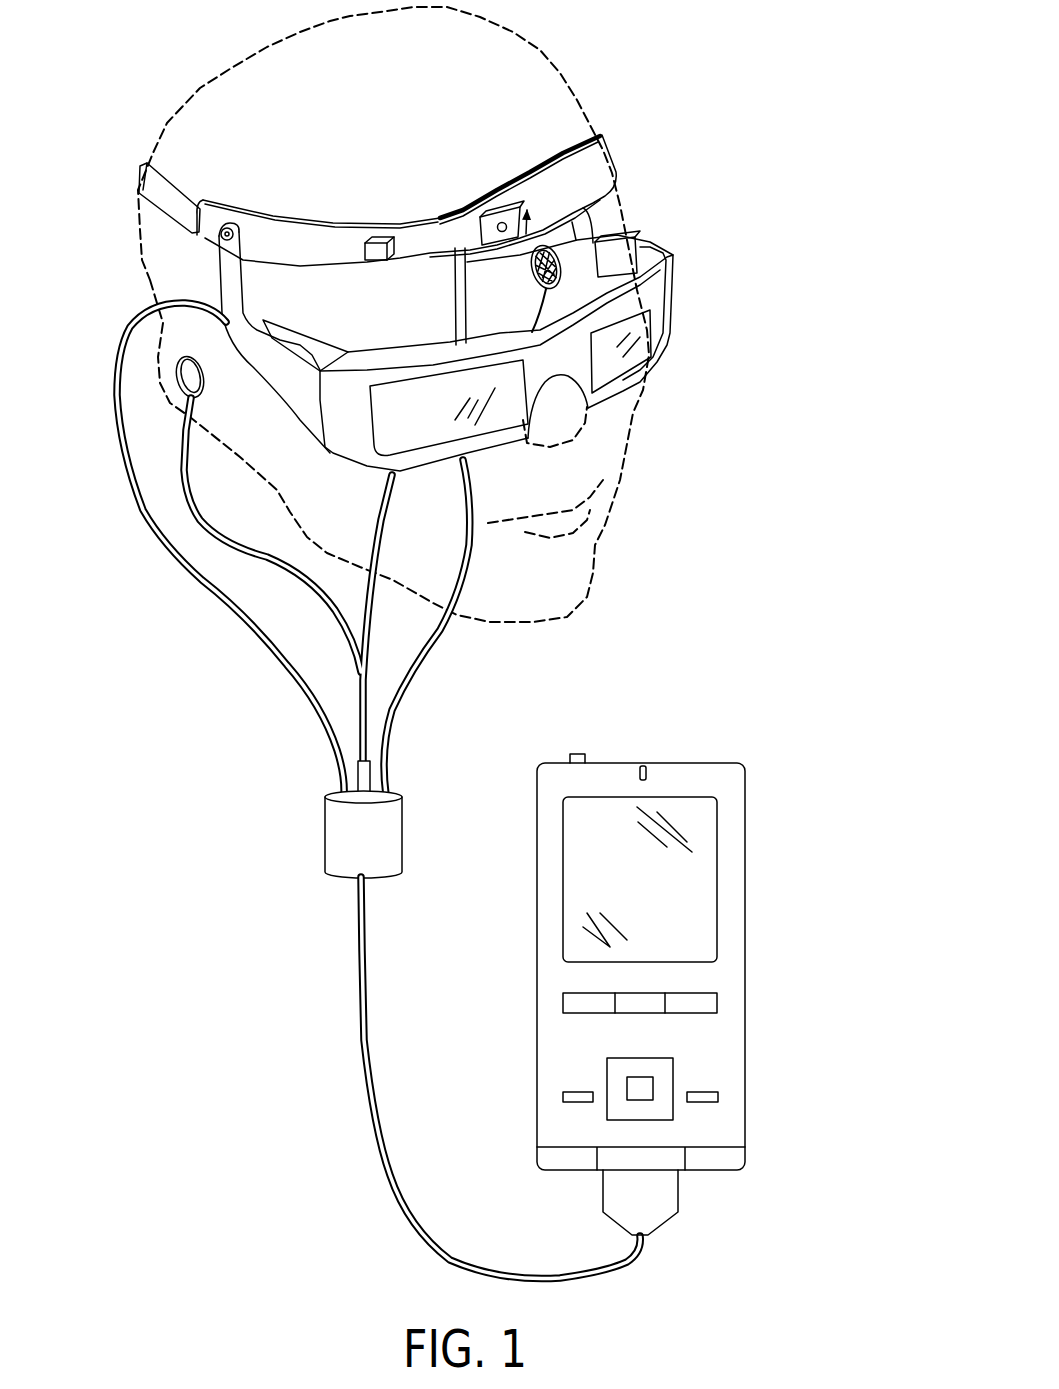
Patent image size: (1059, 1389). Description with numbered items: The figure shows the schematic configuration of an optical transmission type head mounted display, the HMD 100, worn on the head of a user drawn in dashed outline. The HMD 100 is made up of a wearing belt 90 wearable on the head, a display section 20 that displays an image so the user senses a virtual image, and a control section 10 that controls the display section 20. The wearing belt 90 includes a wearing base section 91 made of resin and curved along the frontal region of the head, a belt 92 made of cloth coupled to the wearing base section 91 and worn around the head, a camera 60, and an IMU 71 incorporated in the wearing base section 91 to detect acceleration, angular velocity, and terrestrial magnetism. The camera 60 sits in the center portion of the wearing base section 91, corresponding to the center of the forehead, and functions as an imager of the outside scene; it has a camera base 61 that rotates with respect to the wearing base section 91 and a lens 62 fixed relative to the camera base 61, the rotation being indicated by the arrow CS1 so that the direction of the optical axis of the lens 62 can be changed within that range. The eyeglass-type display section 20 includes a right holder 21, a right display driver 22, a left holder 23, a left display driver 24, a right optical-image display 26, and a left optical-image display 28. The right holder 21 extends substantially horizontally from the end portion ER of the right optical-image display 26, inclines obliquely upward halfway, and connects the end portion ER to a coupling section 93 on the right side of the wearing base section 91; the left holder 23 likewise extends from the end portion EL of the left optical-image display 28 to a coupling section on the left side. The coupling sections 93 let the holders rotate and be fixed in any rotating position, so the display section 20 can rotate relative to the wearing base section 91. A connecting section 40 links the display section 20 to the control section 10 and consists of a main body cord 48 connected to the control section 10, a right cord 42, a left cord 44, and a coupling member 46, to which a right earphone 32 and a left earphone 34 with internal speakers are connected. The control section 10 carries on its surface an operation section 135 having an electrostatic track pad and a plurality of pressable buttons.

The HMD 100 is at (464, 643).
The control section 10 is at (680, 958).
The display section 20 is at (421, 303).
The right holder 21 is at (268, 398).
The right display driver 22 is at (306, 335).
The left holder 23 is at (655, 228).
The left display driver 24 is at (616, 240).
The right optical-image display 26 is at (423, 442).
The left optical-image display 28 is at (655, 350).
The right earphone 32 is at (184, 378).
The left earphone 34 is at (530, 270).
The connecting section 40 is at (378, 791).
The right cord 42 is at (216, 620).
The left cord 44 is at (438, 648).
The coupling member 46 is at (386, 832).
The main body cord 48 is at (362, 1036).
The camera 60 is at (479, 182).
The camera base 61 is at (481, 212).
The lens 62 is at (500, 220).
The IMU 71 is at (374, 228).
The wearing belt 90 is at (380, 194).
The wearing base section 91 is at (574, 148).
The belt 92 is at (153, 162).
The coupling section 93 is at (218, 235).
The operation section 135 is at (720, 972).
The arrow CS1 is at (538, 219).
The end portion ER is at (346, 447).
The end portion EL is at (676, 296).